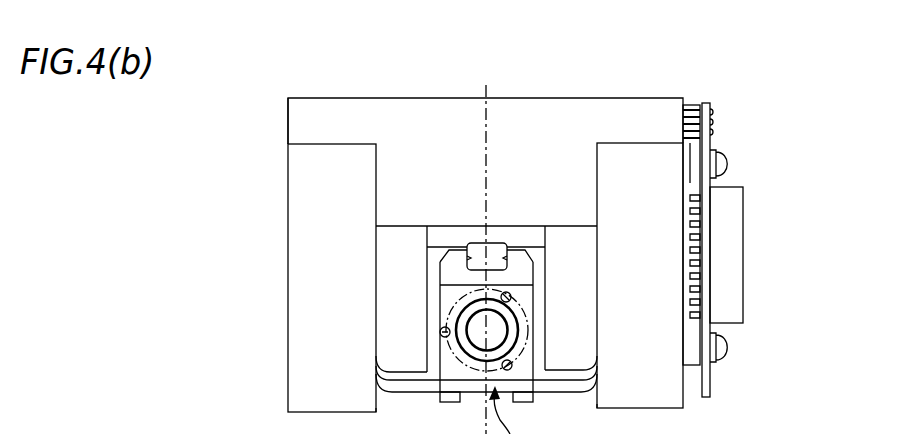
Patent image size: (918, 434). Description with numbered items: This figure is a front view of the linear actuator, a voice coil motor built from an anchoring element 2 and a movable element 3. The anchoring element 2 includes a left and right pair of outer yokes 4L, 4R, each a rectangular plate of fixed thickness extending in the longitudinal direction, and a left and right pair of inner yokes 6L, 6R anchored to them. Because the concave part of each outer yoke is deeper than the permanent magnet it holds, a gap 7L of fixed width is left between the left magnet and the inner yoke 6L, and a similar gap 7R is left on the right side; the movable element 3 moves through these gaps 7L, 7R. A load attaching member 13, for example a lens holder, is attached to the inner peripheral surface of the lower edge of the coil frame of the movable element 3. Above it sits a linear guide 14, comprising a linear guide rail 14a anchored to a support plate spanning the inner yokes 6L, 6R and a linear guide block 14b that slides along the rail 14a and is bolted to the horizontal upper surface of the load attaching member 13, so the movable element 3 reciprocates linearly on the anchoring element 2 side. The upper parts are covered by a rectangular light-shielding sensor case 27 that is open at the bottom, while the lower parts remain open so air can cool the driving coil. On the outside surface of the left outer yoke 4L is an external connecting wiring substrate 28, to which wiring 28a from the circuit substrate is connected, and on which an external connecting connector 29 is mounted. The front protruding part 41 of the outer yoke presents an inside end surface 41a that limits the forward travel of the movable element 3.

The anchoring element 2 is at (280, 189).
The movable element 3 is at (414, 374).
The right outer yoke 4R is at (302, 223).
The left outer yoke 4L is at (638, 312).
The right inner yoke 6R is at (388, 280).
The left inner yoke 6L is at (585, 275).
The right gap 7R is at (393, 421).
The left gap 7L is at (593, 419).
The load attaching member 13 is at (526, 348).
The linear guide 14 is at (541, 137).
The linear guide rail 14a is at (497, 247).
The linear guide block 14b is at (512, 272).
The light-shielding sensor case 27 is at (402, 135).
The external connecting wiring substrate 28 is at (712, 247).
The wiring 28a is at (690, 114).
The external connecting connector 29 is at (743, 210).
The front protruding part 41 is at (682, 269).
The inside end surface of front protruding part 41a is at (727, 314).